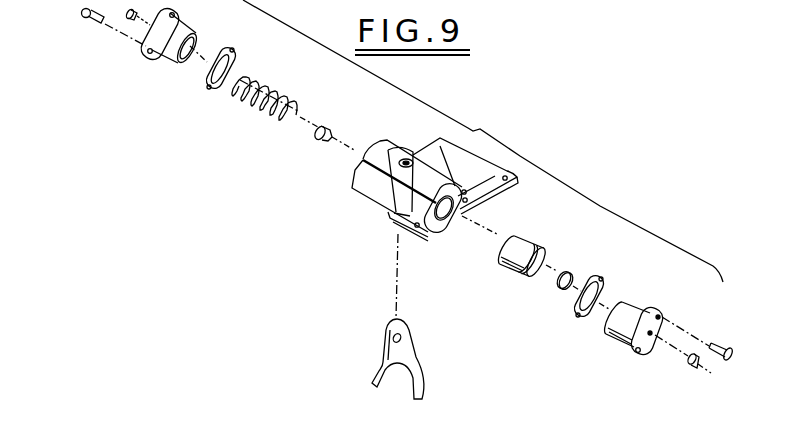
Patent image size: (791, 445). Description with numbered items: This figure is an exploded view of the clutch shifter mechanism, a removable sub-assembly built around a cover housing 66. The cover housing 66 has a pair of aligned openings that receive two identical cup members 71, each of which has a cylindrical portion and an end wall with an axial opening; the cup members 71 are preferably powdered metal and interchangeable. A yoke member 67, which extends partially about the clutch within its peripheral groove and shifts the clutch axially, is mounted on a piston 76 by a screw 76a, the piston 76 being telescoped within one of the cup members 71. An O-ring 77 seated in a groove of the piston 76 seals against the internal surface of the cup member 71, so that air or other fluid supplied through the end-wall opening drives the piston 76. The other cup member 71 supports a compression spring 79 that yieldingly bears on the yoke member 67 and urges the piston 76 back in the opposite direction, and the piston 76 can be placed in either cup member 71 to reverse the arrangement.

The cup member 71 is at (184, 36).
The compression spring 79 is at (273, 94).
The screw 76a is at (323, 146).
The cover housing 66 is at (373, 200).
The yoke member 67 is at (412, 358).
The piston 76 is at (522, 248).
The O-ring 77 is at (571, 271).